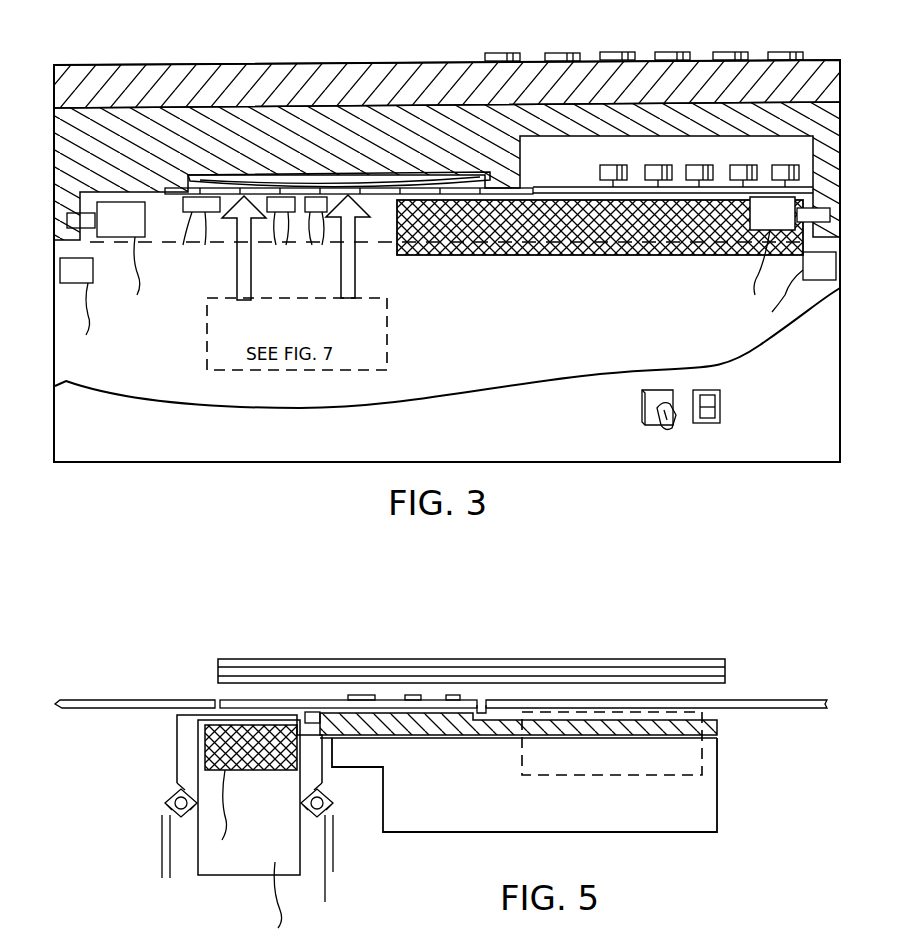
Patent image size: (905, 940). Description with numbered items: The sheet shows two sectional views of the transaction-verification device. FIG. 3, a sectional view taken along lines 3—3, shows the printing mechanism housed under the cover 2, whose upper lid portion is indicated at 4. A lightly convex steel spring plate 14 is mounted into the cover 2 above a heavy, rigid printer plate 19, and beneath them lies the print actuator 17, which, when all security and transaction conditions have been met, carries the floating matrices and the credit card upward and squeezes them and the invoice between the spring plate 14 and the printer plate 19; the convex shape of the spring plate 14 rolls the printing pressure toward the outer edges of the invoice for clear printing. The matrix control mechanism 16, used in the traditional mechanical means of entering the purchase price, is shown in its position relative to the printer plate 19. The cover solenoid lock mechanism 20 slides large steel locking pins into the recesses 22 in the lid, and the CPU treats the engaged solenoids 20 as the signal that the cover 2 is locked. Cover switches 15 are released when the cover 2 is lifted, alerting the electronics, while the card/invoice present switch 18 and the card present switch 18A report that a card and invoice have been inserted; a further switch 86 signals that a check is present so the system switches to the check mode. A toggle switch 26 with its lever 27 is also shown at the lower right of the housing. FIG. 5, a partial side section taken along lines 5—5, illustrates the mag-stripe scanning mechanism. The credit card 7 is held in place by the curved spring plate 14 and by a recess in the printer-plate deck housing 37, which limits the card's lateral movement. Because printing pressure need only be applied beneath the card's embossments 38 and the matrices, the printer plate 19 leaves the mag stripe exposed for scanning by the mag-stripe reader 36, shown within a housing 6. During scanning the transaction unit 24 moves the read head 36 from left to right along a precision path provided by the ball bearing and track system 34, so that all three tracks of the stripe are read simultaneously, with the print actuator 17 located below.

In FIG. 3, the cover 2 is at (848, 235).
In FIG. 3, the keys 3 is at (828, 46).
In FIG. 3, the top panel 4 is at (54, 108).
In FIG. 3, the switch 5 is at (721, 410).
In FIG. 5, the sensor housing 6 is at (196, 718).
In FIG. 5, the credit card 7 is at (236, 702).
In FIG. 3, the spring plate 14 is at (213, 176).
In FIG. 5, the spring plate 14 is at (258, 668).
In FIG. 3, the cover switch 15 is at (65, 269).
In FIG. 3, the matrix control mechanism 16 is at (645, 257).
In FIG. 5, the matrix control mechanism 16 is at (635, 758).
In FIG. 3, the print actuator 17 is at (207, 343).
In FIG. 5, the print actuator 17 is at (665, 810).
In FIG. 3, the card/invoice present switch 18 is at (203, 233).
In FIG. 3, the card present switch 18A is at (317, 237).
In FIG. 3, the printer plate 19 is at (378, 198).
In FIG. 5, the printer plate 19 is at (717, 727).
In FIG. 3, the cover solenoid lock mechanism 20 is at (112, 228).
In FIG. 3, the recess 22 is at (830, 215).
In FIG. 5, the transaction unit 24 is at (245, 858).
In FIG. 3, the toggle switch 26 is at (648, 428).
In FIG. 3, the switch lever 27 is at (673, 418).
In FIG. 5, the ball bearing and track system 34 is at (165, 803).
In FIG. 5, the mag-stripe reader 36 is at (205, 743).
In FIG. 5, the deck housing 37 is at (113, 703).
In FIG. 5, the embossments 38 is at (452, 695).
In FIG. 3, the check present switch 86 is at (278, 233).